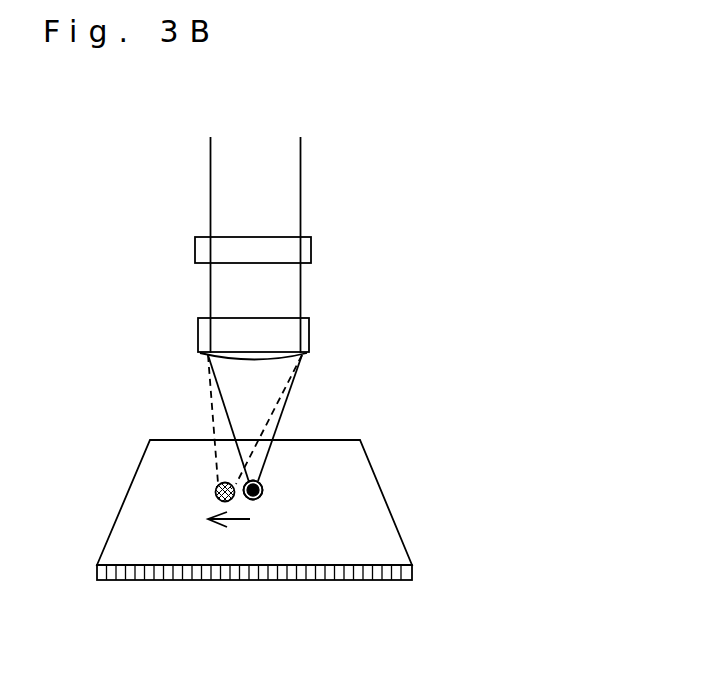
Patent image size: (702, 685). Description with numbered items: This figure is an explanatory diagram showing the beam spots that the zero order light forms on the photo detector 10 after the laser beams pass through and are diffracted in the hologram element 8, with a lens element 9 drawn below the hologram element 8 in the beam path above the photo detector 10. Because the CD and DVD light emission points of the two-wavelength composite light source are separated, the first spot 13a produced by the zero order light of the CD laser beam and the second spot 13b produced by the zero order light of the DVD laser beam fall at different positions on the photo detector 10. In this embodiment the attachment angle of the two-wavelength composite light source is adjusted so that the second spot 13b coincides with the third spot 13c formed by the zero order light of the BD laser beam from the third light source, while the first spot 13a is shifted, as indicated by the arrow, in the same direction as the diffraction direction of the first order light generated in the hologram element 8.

The hologram element 8 is at (312, 240).
The focusing lens 9 is at (312, 328).
The photo detector 10 is at (387, 495).
The first spot 13a is at (216, 492).
The second spot 13b is at (256, 497).
The third spot 13c is at (263, 483).